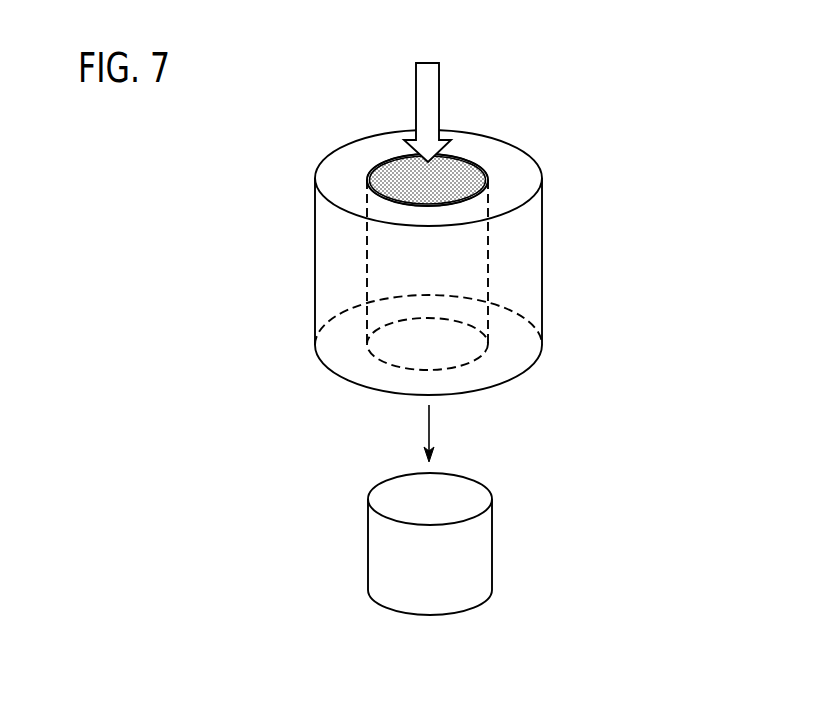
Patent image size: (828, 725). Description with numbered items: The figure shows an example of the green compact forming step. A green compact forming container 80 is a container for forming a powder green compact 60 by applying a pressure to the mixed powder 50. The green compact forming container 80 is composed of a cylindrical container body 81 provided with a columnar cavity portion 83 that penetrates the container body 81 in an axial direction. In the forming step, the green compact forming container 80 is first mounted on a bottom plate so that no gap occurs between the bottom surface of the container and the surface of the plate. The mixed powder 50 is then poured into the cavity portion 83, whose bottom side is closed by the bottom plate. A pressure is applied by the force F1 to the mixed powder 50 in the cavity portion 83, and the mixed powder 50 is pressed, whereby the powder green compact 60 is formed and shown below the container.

The green compact forming container 80 is at (452, 235).
The cylindrical container body 81 is at (314, 252).
The columnar cavity portion 83 is at (378, 173).
The mixed powder 50 is at (455, 185).
The force F1 is at (439, 80).
The powder green compact 60 is at (492, 535).